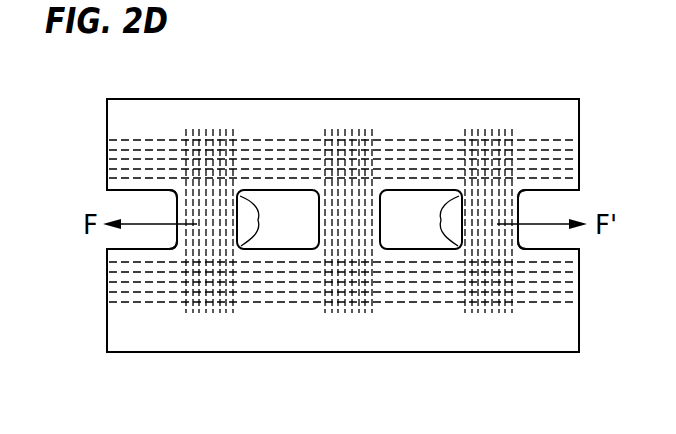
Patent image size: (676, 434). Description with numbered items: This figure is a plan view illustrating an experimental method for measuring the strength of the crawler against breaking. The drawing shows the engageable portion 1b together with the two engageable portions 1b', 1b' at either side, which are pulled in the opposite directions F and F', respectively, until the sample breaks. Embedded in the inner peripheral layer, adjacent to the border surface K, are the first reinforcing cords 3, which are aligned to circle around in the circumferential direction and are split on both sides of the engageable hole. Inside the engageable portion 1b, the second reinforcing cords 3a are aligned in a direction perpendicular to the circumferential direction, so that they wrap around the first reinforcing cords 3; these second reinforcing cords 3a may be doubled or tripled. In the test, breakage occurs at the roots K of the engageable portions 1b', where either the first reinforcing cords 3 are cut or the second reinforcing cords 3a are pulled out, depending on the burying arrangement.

The first reinforcing cords 3 is at (138, 150).
The second reinforcing cords 3a is at (185, 250).
The engageable portion 1b is at (349, 149).
The engageable portion 1b' is at (356, 149).